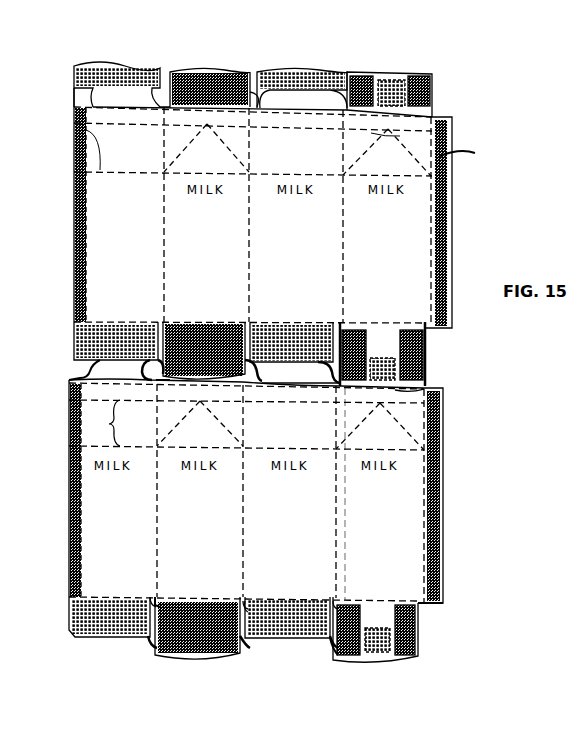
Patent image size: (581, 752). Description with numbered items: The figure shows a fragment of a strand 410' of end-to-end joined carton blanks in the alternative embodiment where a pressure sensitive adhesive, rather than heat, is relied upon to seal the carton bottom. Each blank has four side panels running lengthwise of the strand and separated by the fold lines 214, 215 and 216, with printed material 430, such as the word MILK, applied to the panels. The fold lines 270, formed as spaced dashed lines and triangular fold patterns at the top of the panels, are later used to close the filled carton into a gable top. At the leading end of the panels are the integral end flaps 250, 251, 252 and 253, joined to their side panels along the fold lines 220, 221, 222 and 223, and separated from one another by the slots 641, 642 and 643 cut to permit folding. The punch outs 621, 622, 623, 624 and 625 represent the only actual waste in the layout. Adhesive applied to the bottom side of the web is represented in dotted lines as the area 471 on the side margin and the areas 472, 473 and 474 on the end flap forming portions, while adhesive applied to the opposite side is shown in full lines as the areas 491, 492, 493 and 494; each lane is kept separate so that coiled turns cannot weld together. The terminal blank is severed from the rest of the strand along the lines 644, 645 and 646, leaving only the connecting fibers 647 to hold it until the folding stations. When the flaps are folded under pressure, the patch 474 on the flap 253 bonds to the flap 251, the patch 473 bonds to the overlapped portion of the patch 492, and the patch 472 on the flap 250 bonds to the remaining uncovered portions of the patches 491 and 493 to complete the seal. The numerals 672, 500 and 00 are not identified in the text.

The strand of carton blanks 410' is at (311, 355).
The punch out 621 is at (80, 91).
The punch out 622 is at (165, 86).
The punch out 623 is at (248, 98).
The punch out 624 is at (346, 87).
The punch out 625 is at (455, 110).
The fold lines 270 is at (88, 150).
The printed material 430 is at (93, 188).
The adhesive area 471 is at (80, 243).
The fold line 214 is at (162, 259).
The fold line 215 is at (248, 259).
The fold line 216 is at (340, 262).
The adhesive area 494 is at (437, 266).
The bottom flap 672 is at (76, 338).
The slot 641 is at (163, 330).
The adhesive area 473 is at (308, 330).
The adhesive area 474 is at (386, 358).
The severing line 644 is at (95, 361).
The severing line 645 is at (168, 380).
The connecting fibers 647 is at (293, 365).
The severing line 646 is at (433, 391).
The sealing strip panel 500 is at (446, 441).
The second carton blank 00 is at (68, 584).
The fold line 220 is at (130, 597).
The fold line 221 is at (210, 597).
The fold line 222 is at (300, 598).
The fold line 223 is at (392, 599).
The slot 642 is at (243, 598).
The slot 643 is at (332, 599).
The end flap 250 is at (100, 638).
The adhesive area 472 is at (70, 612).
The adhesive area 491 is at (158, 641).
The end flap 251 is at (207, 655).
The end flap 252 is at (273, 628).
The adhesive area 492 is at (334, 656).
The end flap 253 is at (394, 657).
The adhesive area 493 is at (420, 610).